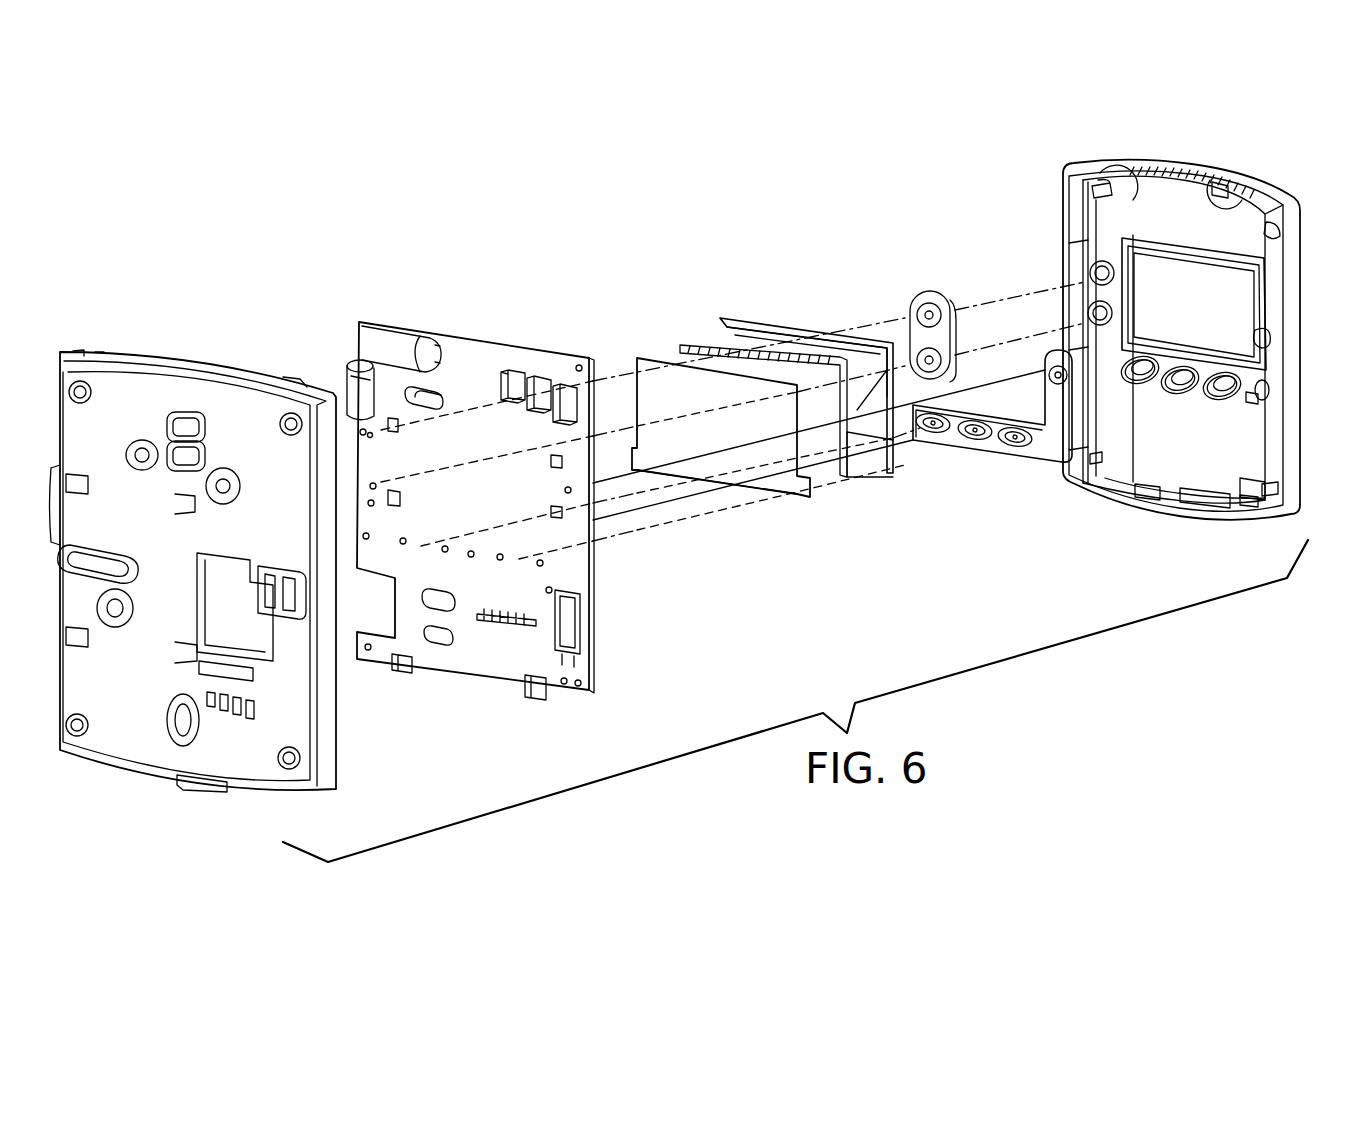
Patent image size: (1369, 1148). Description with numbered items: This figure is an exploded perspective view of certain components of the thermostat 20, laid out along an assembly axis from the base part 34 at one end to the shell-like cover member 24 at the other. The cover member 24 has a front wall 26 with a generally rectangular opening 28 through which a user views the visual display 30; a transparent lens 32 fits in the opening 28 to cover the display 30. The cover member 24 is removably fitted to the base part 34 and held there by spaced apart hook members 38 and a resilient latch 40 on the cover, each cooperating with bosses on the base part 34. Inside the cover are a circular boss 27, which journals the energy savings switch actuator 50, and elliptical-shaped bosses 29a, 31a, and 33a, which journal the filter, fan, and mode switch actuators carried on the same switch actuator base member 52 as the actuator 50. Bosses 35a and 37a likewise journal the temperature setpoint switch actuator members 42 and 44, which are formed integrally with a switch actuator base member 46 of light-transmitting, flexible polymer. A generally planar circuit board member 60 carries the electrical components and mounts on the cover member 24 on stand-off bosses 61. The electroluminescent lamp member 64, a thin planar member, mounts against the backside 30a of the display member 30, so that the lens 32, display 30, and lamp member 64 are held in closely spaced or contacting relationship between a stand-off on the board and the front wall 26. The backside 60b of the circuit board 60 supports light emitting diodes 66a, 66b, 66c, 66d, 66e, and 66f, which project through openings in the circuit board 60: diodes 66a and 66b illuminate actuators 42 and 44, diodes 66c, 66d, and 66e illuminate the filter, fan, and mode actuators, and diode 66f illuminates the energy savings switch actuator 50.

The thermostat 20 is at (592, 295).
The cover member 24 is at (1280, 418).
The front wall 26 is at (1245, 478).
The circular boss 27 is at (1258, 335).
The rectangular opening 28 is at (1207, 274).
The elliptical-shaped boss 29a is at (1224, 400).
The visual display 30 is at (847, 450).
The backside of display member 30a is at (687, 360).
The elliptical-shaped boss 31a is at (1180, 396).
The transparent lens 32 is at (753, 340).
The elliptical-shaped boss 33a is at (1140, 388).
The base part 34 is at (168, 357).
The boss 35a is at (1105, 265).
The boss 37a is at (1118, 314).
The hook member 38 is at (1063, 180).
The resilient latch 40 is at (1167, 512).
The switch actuator member 42 is at (953, 310).
The switch actuator member 44 is at (953, 352).
The switch actuator base member 46 is at (952, 342).
The energy savings switch actuator 50 is at (1053, 357).
The switch actuator base member 52 is at (1025, 455).
The circuit board member 60 is at (593, 626).
The backside of circuit board 60b is at (556, 688).
The stand-off boss 61 is at (1113, 186).
The electroluminescent lamp member 64 is at (653, 388).
The light emitting diode 66a is at (368, 434).
The light emitting diode 66b is at (373, 484).
The light emitting diode 66c is at (421, 548).
The light emitting diode 66d is at (471, 556).
The light emitting diode 66e is at (520, 566).
The light emitting diode 66f is at (568, 489).